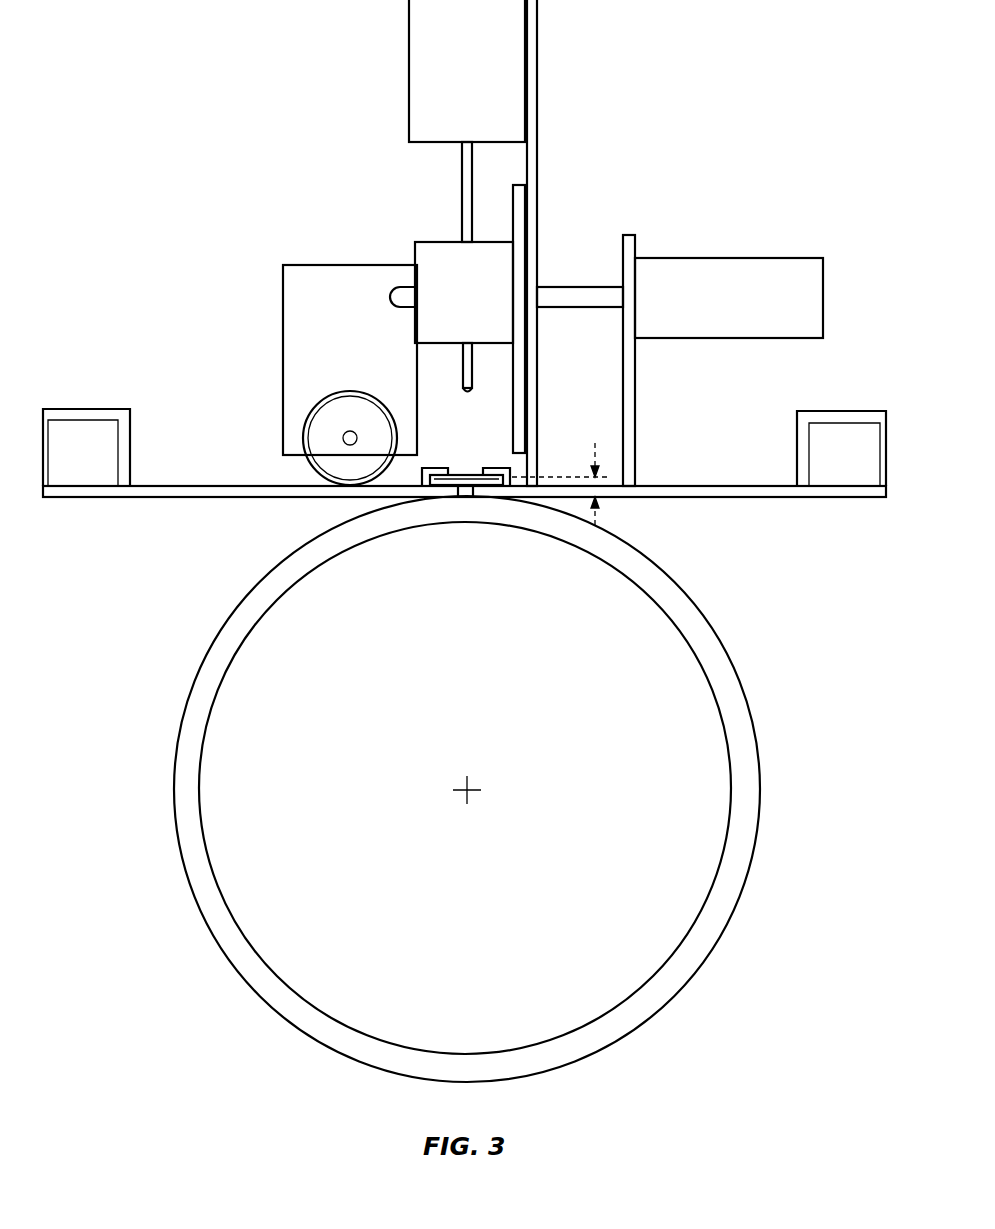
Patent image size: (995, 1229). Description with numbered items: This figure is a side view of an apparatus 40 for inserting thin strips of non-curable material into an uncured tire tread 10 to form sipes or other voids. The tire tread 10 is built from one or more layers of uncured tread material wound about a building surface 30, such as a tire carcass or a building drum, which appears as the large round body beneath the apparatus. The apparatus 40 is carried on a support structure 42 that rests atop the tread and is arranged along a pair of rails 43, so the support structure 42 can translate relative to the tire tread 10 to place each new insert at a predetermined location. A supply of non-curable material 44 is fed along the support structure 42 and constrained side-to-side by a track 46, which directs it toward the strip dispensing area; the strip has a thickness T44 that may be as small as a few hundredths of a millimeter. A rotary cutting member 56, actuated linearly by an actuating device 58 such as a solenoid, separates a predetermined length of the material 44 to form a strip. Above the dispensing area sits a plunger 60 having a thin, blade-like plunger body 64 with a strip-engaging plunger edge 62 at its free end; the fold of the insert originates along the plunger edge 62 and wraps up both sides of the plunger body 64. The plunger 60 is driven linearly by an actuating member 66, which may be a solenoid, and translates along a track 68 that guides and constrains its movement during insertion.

The tire tread 10 is at (762, 790).
The building surface 30 is at (682, 896).
The apparatus 40 is at (811, 207).
The support structure 42 is at (162, 497).
The rails 43 is at (95, 468).
The non-curable material 44 is at (459, 475).
The track 46 is at (497, 468).
The cutting member 56 is at (304, 440).
The actuating device 58 is at (730, 258).
The plunger 60 is at (441, 240).
The plunger edge 62 is at (467, 394).
The plunger body 64 is at (462, 378).
The actuating member 66 is at (410, 57).
The track 68 is at (513, 203).
The thickness of the strip T44 is at (594, 446).